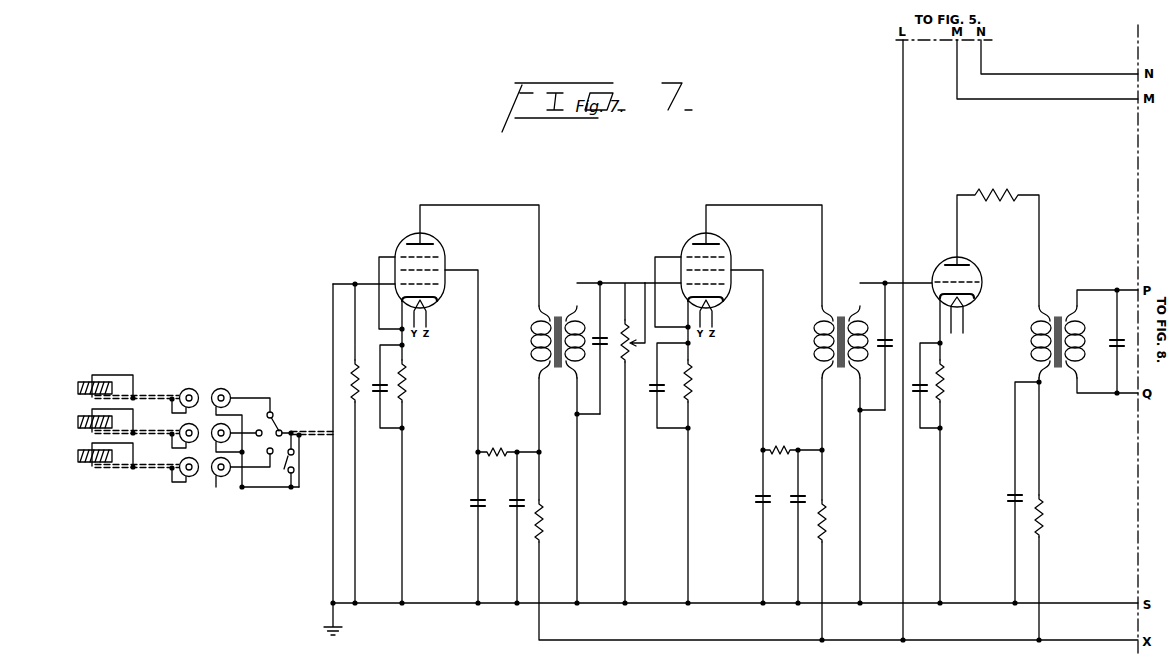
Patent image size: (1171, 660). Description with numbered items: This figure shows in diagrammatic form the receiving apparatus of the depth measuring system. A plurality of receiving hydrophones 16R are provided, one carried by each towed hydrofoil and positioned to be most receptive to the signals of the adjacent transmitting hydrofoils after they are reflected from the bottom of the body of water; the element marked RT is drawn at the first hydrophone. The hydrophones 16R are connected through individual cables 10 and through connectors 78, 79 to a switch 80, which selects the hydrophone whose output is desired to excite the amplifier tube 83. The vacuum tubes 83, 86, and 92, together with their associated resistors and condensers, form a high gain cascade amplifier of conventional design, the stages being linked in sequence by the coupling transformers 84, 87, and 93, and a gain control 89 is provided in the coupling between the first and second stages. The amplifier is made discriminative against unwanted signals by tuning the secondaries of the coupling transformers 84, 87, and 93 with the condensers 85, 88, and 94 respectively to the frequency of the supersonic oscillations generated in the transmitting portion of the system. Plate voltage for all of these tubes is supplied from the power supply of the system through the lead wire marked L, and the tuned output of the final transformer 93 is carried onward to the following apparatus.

The radiation thermocouple element RT is at (91, 373).
The receiving hydrophone 16R is at (80, 458).
The cable 10 is at (145, 463).
The connector 78 is at (190, 389).
The connector 79 is at (222, 389).
The switch 80 is at (277, 421).
The amplifier tube 83 is at (446, 246).
The coupling transformer 84 is at (561, 308).
The condenser 85 is at (601, 348).
The vacuum tube 86 is at (732, 246).
The coupling transformer 87 is at (843, 308).
The condenser 88 is at (889, 343).
The gain control 89 is at (629, 352).
The vacuum tube 92 is at (973, 262).
The coupling transformer 93 is at (1062, 308).
The condenser 94 is at (1115, 349).